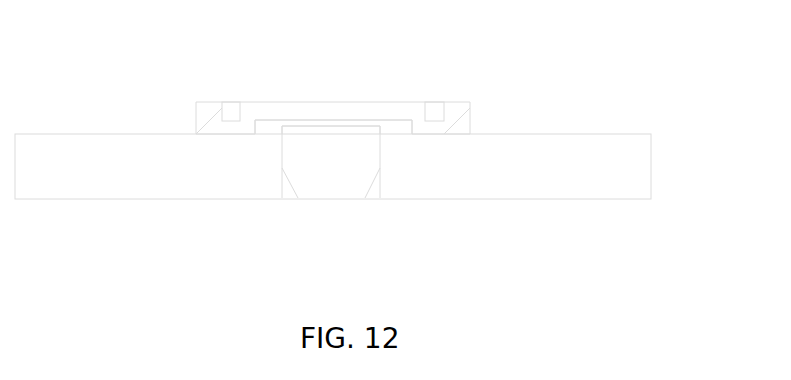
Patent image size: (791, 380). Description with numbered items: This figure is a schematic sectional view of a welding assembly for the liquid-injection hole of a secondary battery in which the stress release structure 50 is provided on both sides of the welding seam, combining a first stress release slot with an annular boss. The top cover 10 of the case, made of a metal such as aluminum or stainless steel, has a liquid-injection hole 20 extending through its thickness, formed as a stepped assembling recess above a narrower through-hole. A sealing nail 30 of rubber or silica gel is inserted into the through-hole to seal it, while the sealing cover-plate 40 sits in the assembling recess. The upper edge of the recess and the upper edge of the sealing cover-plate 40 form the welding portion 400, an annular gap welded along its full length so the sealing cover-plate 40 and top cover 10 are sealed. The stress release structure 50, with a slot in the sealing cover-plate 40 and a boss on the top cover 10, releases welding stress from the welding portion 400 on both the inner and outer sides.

The top cover of case 10 is at (540, 165).
The liquid-injection hole 20 is at (270, 127).
The sealing nail 30 is at (355, 175).
The sealing cover-plate 40 is at (308, 75).
The stress release structure 50 is at (461, 110).
The welding portion 400 is at (218, 125).